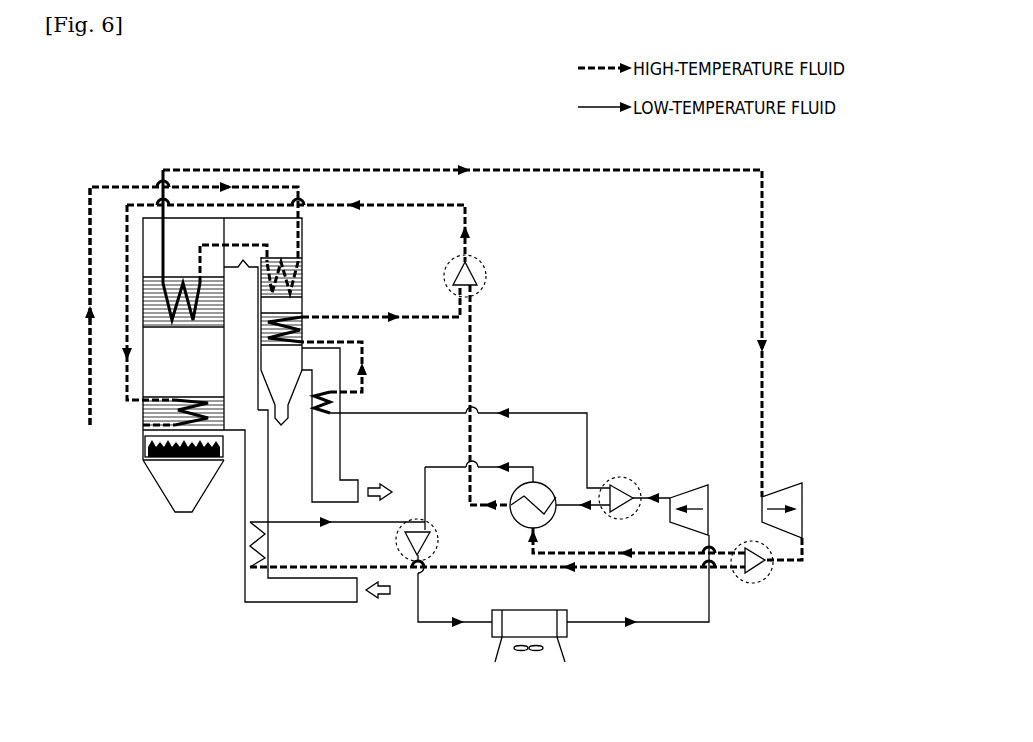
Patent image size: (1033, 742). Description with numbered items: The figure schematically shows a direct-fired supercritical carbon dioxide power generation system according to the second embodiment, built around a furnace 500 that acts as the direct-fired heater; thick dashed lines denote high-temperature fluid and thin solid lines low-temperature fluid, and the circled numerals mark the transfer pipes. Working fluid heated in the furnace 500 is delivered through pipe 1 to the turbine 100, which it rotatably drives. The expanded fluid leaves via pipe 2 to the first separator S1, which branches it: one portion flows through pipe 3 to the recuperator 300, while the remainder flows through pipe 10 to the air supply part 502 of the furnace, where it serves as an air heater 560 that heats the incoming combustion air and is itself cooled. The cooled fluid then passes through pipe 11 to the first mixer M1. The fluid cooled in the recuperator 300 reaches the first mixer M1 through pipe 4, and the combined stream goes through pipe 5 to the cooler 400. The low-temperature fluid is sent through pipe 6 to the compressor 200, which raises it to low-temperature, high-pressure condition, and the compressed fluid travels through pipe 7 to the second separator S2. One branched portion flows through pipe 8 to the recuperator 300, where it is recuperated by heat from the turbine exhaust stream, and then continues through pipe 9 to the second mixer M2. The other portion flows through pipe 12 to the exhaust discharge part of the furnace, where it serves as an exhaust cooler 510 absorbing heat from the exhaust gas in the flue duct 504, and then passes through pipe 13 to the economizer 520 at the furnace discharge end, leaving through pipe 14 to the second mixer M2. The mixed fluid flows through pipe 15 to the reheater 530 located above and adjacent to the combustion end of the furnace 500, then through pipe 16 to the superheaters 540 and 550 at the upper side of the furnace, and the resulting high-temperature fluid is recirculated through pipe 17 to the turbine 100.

The turbine 100 is at (802, 508).
The compressor 200 is at (700, 520).
The recuperator 300 is at (545, 492).
The cooler 400 is at (515, 630).
The furnace 500 is at (158, 492).
The air supply part 502 is at (292, 590).
The flue gas duct 504 is at (318, 463).
The exhaust cooler 510 is at (325, 415).
The economizer 520 is at (302, 325).
The reheater 530 is at (143, 410).
The superheater 540 is at (283, 257).
The superheater 550 is at (213, 283).
The air heater 560 is at (247, 545).
The first mixer M1 is at (483, 272).
The second mixer M2 is at (400, 540).
The first separator S1 is at (757, 585).
The second separator S2 is at (620, 478).
The transfer pipe 1 is at (480, 331).
The transfer pipe 2 is at (786, 567).
The transfer pipe 3 is at (636, 538).
The transfer pipe 4 is at (481, 481).
The transfer pipe 5 is at (455, 606).
The transfer pipe 6 is at (638, 596).
The transfer pipe 7 is at (655, 481).
The transfer pipe 8 is at (583, 520).
The transfer pipe 9 is at (486, 412).
The transfer pipe 10 is at (497, 580).
The transfer pipe 11 is at (337, 508).
The transfer pipe 12 is at (470, 435).
The transfer pipe 13 is at (383, 362).
The transfer pipe 14 is at (381, 301).
The transfer pipe 15 is at (298, 230).
The transfer pipe 16 is at (75, 306).
The transfer pipe 17 is at (181, 236).